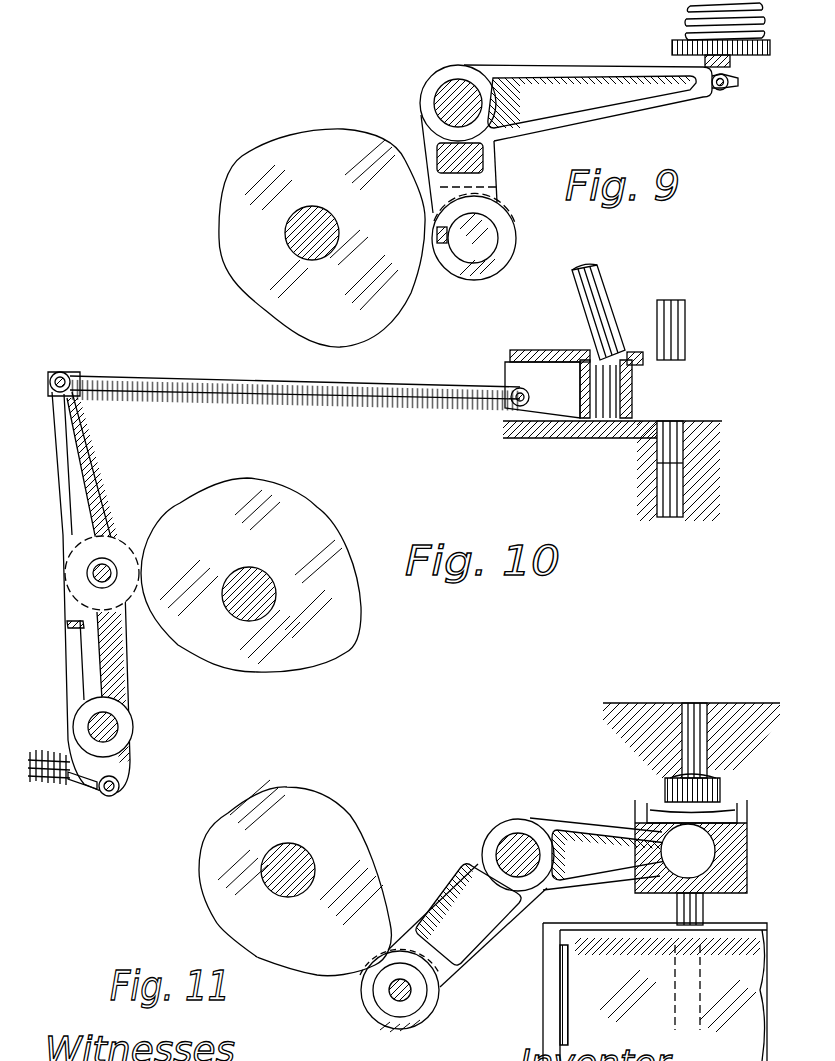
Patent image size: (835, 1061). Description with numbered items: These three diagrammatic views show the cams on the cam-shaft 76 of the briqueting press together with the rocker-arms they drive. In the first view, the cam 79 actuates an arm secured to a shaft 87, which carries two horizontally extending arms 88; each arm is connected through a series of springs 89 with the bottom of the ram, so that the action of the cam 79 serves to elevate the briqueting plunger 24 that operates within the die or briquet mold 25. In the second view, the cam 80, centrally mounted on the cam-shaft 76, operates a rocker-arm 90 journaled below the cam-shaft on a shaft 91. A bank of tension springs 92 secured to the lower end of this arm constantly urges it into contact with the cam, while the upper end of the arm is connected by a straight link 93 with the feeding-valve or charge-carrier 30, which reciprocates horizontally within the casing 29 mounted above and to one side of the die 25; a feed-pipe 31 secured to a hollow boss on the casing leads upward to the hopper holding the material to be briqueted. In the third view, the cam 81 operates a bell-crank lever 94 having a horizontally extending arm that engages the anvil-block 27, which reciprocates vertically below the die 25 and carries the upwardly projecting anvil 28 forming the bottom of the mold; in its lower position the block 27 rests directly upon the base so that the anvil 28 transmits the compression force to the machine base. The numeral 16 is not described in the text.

In FIG. 11, the cam shaft 16 is at (300, 863).
In FIG. 10, the briqueting plunger 24 is at (687, 327).
In FIG. 10, the die or briquet mold 25 is at (612, 441).
In FIG. 11, the block 27 is at (728, 858).
In FIG. 10, the anvil 28 is at (683, 498).
In FIG. 11, the anvil 28 is at (697, 703).
In FIG. 10, the casing 29 is at (525, 350).
In FIG. 10, the feeding-valve or charge-carrier 30 is at (568, 389).
In FIG. 10, the feed-pipe 31 is at (602, 287).
In FIG. 9, the cam-shaft 76 is at (313, 217).
In FIG. 10, the cam-shaft 76 is at (275, 582).
In FIG. 9, the cam 79 is at (322, 238).
In FIG. 10, the cam 80 is at (251, 575).
In FIG. 11, the cam 81 is at (295, 878).
In FIG. 9, the shaft 87 is at (445, 105).
In FIG. 9, the arms 88 is at (565, 75).
In FIG. 9, the springs 89 is at (760, 20).
In FIG. 10, the rocker-arm 90 is at (117, 680).
In FIG. 10, the shaft 91 is at (122, 728).
In FIG. 10, the tension springs 92 is at (47, 780).
In FIG. 10, the straight link 93 is at (230, 393).
In FIG. 11, the bell-crank lever 94 is at (460, 877).